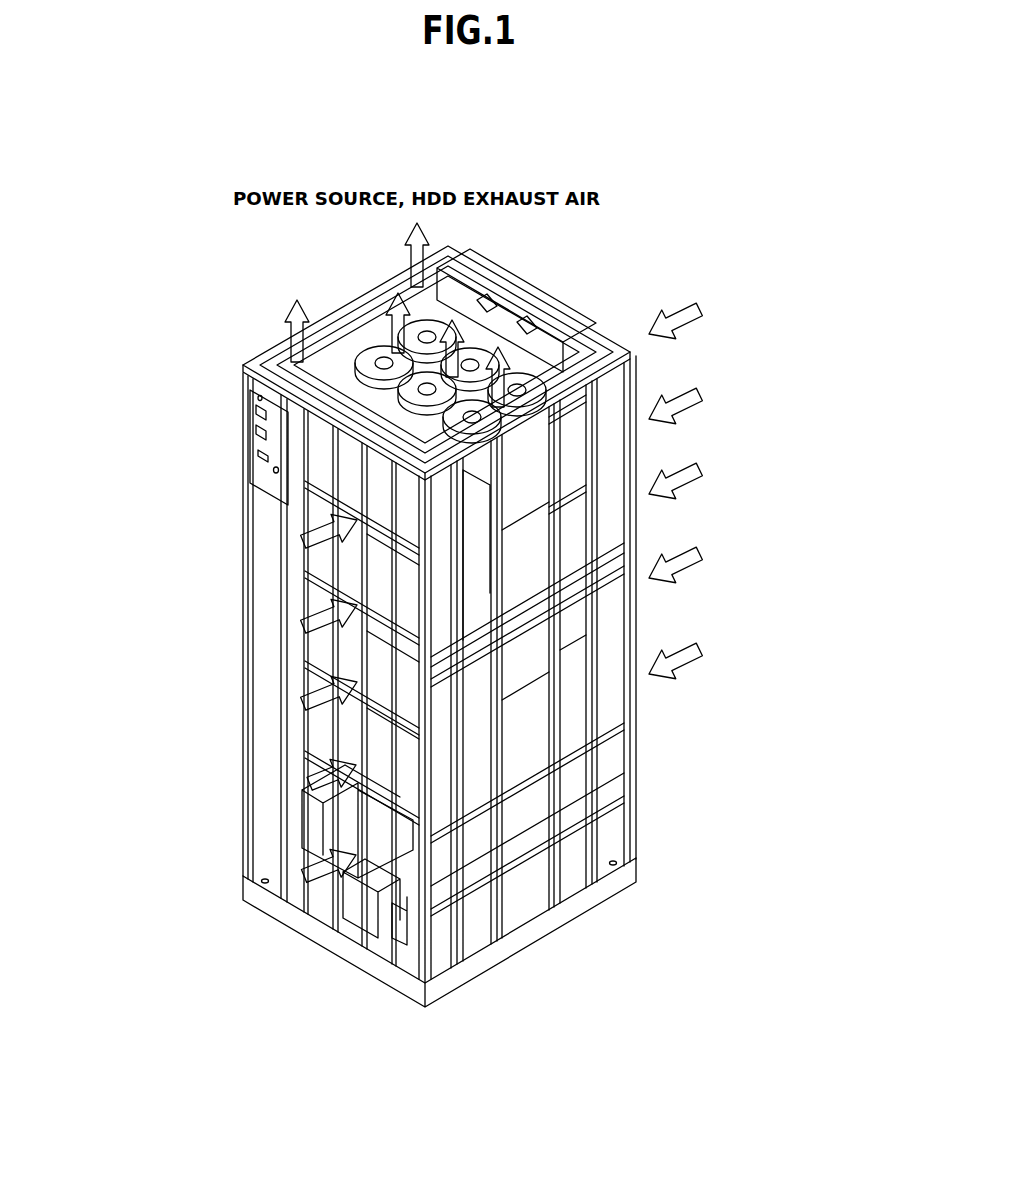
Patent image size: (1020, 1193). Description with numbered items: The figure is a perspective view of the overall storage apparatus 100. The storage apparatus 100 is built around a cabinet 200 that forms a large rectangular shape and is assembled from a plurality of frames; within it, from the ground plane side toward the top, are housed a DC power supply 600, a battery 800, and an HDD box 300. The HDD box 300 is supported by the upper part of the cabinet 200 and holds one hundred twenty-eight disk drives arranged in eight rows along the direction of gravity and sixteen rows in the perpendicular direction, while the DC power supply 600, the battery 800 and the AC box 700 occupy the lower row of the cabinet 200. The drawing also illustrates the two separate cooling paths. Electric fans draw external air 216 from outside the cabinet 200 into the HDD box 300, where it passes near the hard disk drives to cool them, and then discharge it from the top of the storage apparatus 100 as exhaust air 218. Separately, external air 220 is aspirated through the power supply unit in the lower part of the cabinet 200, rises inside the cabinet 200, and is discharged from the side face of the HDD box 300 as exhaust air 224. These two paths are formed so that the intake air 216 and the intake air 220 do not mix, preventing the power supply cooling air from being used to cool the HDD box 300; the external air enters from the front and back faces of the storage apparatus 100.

The storage apparatus 100 is at (472, 628).
The cabinet 200 is at (439, 626).
The external air 216 is at (303, 537).
The exhaust air 218 is at (400, 288).
The external air 220 is at (305, 903).
The exhaust air 224 is at (290, 300).
The HDD box 300 is at (633, 449).
The DC power supply 600 is at (300, 836).
The AC box 700 is at (368, 907).
The battery 800 is at (377, 907).